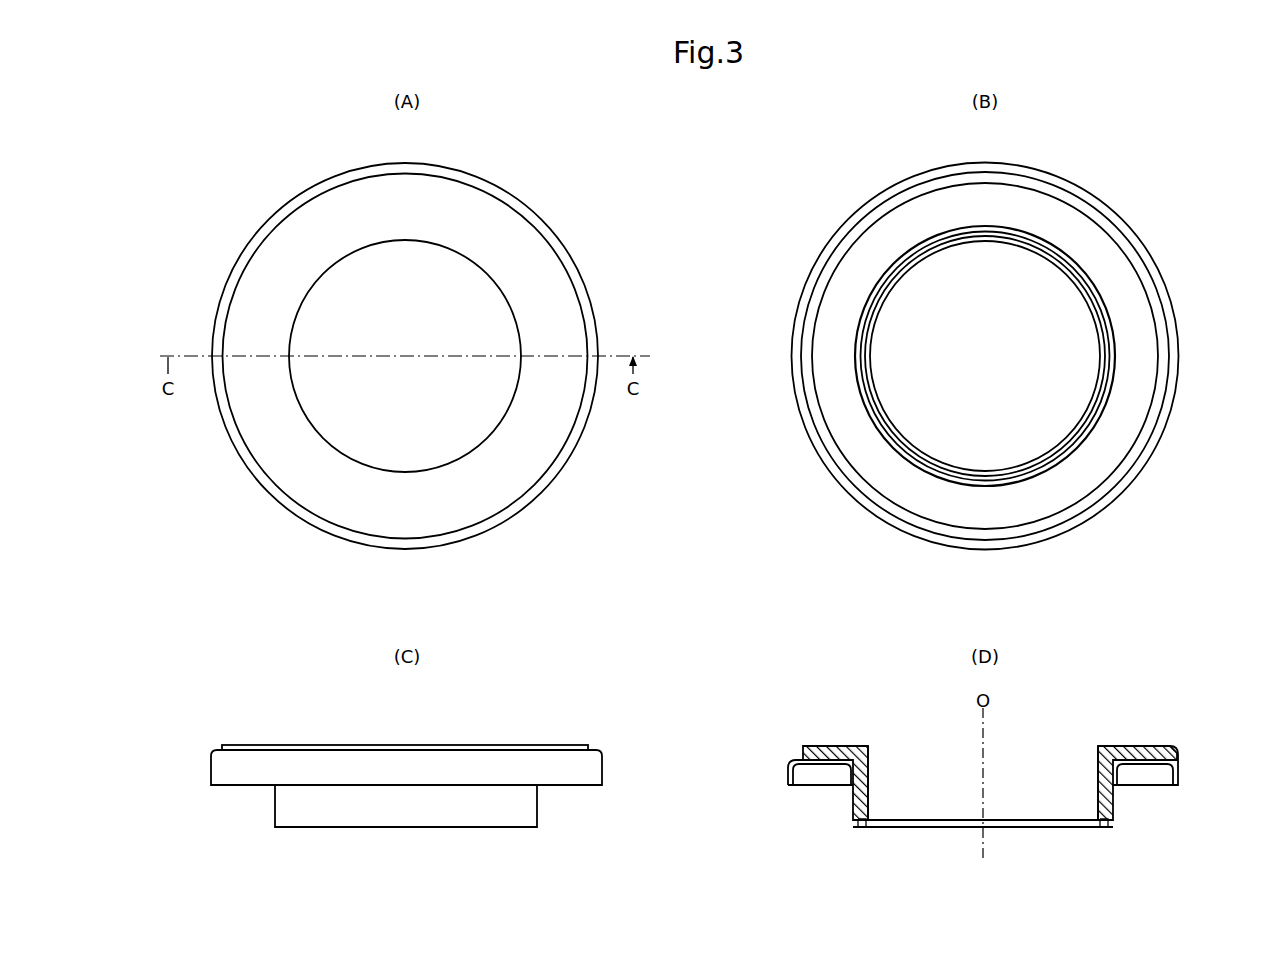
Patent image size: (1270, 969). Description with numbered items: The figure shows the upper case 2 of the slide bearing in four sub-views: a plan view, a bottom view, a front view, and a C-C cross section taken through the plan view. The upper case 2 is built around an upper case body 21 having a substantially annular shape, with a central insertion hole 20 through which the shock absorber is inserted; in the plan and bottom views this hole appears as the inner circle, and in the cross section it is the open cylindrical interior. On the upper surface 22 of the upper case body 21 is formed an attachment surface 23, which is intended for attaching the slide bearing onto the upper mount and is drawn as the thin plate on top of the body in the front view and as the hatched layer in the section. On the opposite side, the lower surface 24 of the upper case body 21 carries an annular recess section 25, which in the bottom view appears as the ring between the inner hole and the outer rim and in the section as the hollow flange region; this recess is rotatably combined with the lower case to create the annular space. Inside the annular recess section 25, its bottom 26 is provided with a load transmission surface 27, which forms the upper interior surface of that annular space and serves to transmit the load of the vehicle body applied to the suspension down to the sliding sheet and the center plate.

The upper case 2 is at (580, 167).
The insertion hole 20 is at (330, 292).
The upper case body 21 is at (553, 253).
The upper surface 22 is at (458, 198).
The attachment surface 23 is at (475, 225).
The lower surface 24 is at (1143, 285).
The annular recess section 25 is at (1135, 355).
The bottom 26 is at (820, 783).
The load transmission surface 27 is at (842, 788).